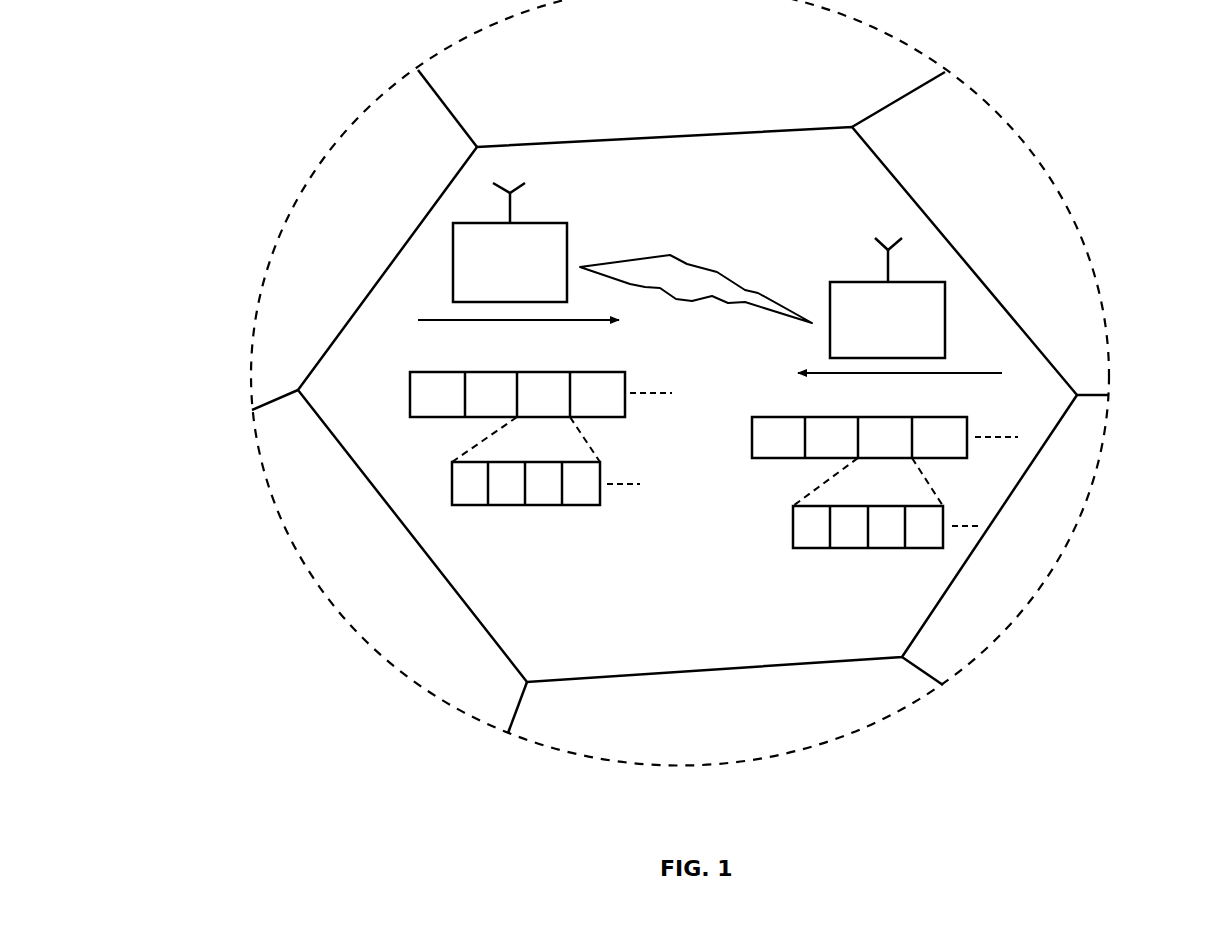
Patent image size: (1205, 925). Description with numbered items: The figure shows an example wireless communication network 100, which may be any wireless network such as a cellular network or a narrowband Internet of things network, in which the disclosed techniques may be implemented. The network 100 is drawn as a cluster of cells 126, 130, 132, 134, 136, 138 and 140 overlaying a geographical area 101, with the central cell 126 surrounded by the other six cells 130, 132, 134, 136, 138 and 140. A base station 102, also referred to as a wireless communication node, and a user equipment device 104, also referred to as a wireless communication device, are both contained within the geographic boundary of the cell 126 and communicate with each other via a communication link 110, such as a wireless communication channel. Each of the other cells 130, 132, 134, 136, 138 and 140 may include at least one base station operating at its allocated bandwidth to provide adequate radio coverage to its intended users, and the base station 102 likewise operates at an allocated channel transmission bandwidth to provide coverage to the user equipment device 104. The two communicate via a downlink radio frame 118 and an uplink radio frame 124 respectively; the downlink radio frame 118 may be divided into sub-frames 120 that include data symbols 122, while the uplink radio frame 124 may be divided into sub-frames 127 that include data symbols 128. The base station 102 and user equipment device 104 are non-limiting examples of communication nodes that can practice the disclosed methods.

The wireless communication network 100 is at (1135, 109).
The geographical area 101 is at (275, 242).
The base station 102 is at (510, 242).
The user equipment device 104 is at (887, 298).
The communication link 110 is at (686, 262).
The downlink radio frame 118 is at (417, 395).
The sub-frame 120 is at (457, 493).
The data symbol 122 is at (547, 500).
The uplink radio frame 124 is at (758, 437).
The cell 126 is at (687, 404).
The sub-frame 127 is at (793, 533).
The data symbol 128 is at (890, 552).
The cell 130 is at (364, 240).
The cell 132 is at (805, 93).
The cell 134 is at (1047, 304).
The cell 136 is at (971, 615).
The cell 138 is at (625, 707).
The cell 140 is at (364, 571).